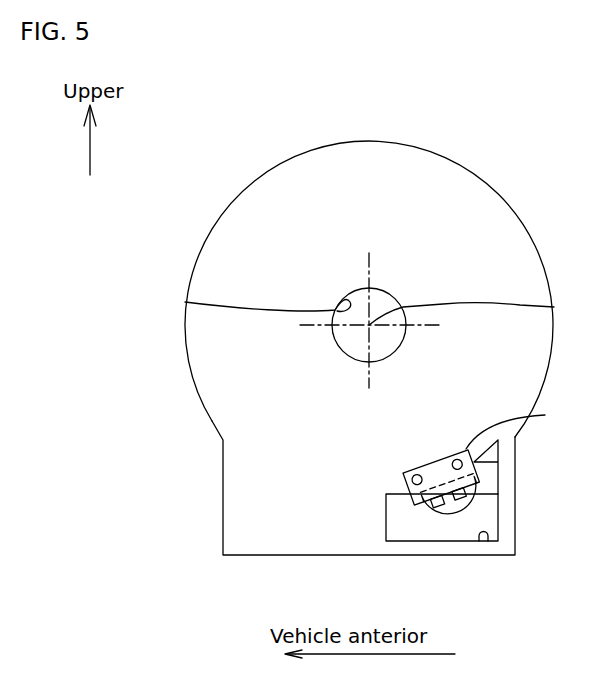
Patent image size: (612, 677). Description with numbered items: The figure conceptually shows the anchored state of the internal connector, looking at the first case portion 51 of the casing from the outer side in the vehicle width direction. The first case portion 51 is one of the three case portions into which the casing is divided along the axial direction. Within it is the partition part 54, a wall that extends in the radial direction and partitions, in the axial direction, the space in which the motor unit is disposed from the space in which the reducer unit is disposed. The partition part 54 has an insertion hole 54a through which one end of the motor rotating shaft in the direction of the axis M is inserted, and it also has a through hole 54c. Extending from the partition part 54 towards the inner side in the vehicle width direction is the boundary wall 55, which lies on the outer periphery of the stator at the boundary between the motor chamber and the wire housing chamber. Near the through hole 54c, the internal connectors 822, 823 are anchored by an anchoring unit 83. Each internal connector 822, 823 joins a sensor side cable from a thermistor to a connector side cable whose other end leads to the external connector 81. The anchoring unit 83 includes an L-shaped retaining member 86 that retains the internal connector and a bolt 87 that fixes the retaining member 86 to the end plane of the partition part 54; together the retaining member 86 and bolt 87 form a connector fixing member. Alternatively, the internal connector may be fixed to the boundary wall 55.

The first case portion 51 is at (464, 165).
The partition part 54 is at (505, 232).
The insertion hole 54a is at (185, 302).
The through hole 54c is at (484, 541).
The axis M is at (554, 307).
The boundary wall 55 is at (482, 458).
The external connector 81 is at (478, 504).
The internal connector 822 is at (438, 508).
The internal connector 823 is at (477, 488).
The anchoring unit 83 is at (482, 472).
The retaining member 86 is at (413, 498).
The bolt 87 is at (545, 415).